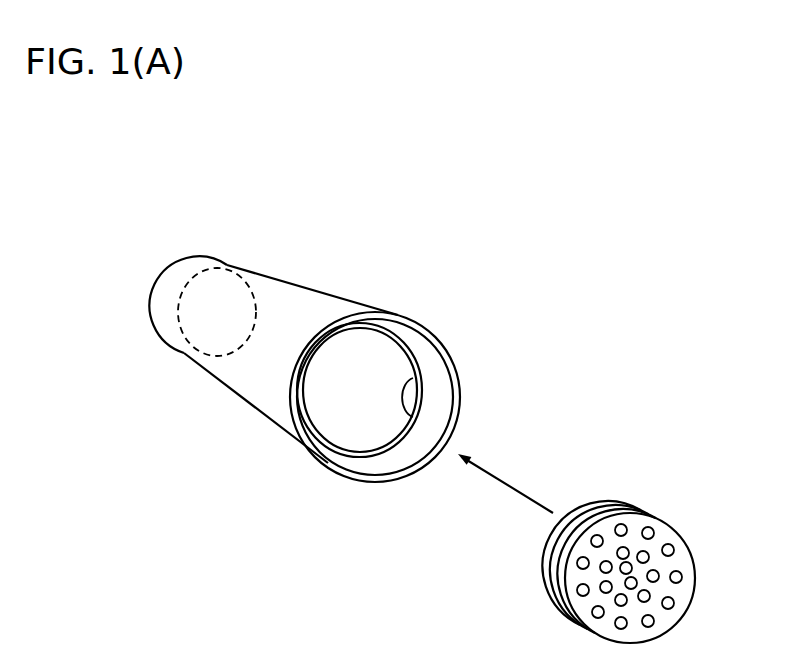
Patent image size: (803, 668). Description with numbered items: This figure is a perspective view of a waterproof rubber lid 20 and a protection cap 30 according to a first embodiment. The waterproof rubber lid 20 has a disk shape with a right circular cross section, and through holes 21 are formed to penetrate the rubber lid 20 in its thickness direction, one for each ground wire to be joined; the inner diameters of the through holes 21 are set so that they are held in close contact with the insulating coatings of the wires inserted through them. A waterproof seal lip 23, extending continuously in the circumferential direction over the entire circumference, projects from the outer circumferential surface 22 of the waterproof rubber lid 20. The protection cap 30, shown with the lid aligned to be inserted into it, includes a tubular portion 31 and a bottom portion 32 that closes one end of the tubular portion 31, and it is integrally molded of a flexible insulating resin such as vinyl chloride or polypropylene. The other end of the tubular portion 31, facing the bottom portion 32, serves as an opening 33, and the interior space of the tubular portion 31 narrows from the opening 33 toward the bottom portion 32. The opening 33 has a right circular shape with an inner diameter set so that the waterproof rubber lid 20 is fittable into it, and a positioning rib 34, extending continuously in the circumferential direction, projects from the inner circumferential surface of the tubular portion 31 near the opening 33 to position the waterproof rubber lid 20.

The waterproof rubber lid 20 is at (615, 538).
The through holes 21 is at (676, 577).
The outer circumferential surface 22 is at (543, 563).
The waterproof seal lip 23 is at (594, 502).
The protection cap 30 is at (298, 364).
The tubular portion 31 is at (288, 272).
The bottom portion 32 is at (193, 308).
The opening 33 is at (332, 433).
The positioning rib 34 is at (404, 388).